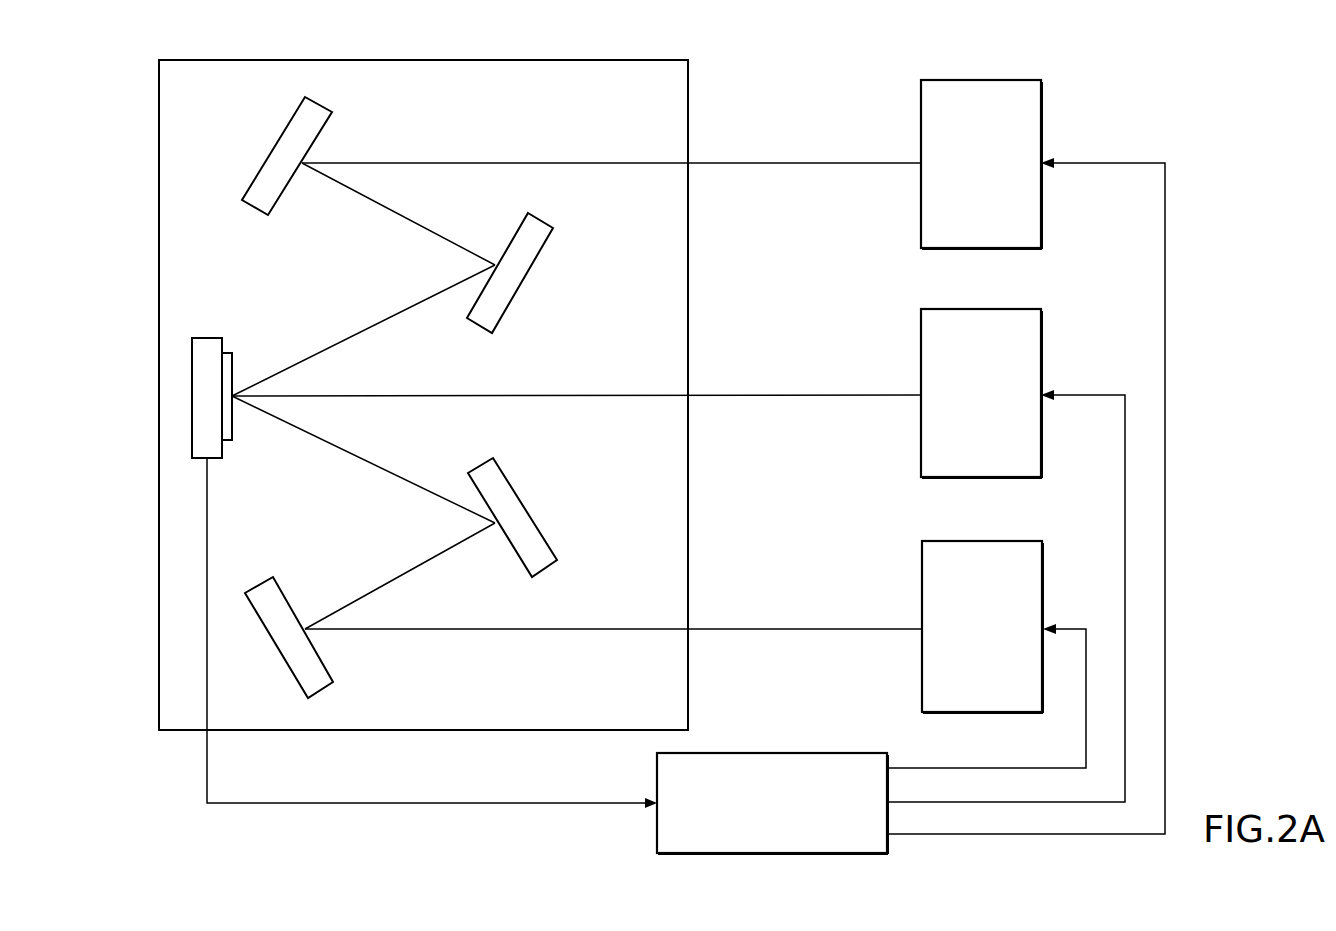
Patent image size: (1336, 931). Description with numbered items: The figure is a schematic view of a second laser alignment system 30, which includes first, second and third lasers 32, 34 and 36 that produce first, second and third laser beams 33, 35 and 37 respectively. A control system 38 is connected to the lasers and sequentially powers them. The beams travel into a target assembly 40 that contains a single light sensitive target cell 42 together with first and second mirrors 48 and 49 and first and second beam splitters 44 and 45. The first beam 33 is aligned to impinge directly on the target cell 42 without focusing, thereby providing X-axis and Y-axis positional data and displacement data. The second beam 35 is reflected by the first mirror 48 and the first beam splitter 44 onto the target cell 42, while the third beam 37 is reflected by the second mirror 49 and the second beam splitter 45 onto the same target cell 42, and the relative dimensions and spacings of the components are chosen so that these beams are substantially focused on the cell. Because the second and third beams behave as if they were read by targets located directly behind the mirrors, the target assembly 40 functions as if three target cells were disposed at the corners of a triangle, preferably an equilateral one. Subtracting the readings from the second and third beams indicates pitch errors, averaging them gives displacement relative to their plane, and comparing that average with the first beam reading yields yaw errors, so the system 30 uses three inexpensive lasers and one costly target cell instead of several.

The laser alignment system 30 is at (756, 84).
The first laser 32 is at (980, 309).
The first laser beam 33 is at (775, 394).
The second laser 34 is at (980, 541).
The second laser beam 35 is at (773, 627).
The third laser 36 is at (980, 80).
The third laser beam 37 is at (775, 161).
The control system 38 is at (728, 752).
The target assembly 40 is at (159, 200).
The light sensitive target cell 42 is at (203, 337).
The first beam splitter 44 is at (515, 487).
The second beam splitter 45 is at (522, 285).
The first mirror 48 is at (322, 690).
The second mirror 49 is at (318, 107).